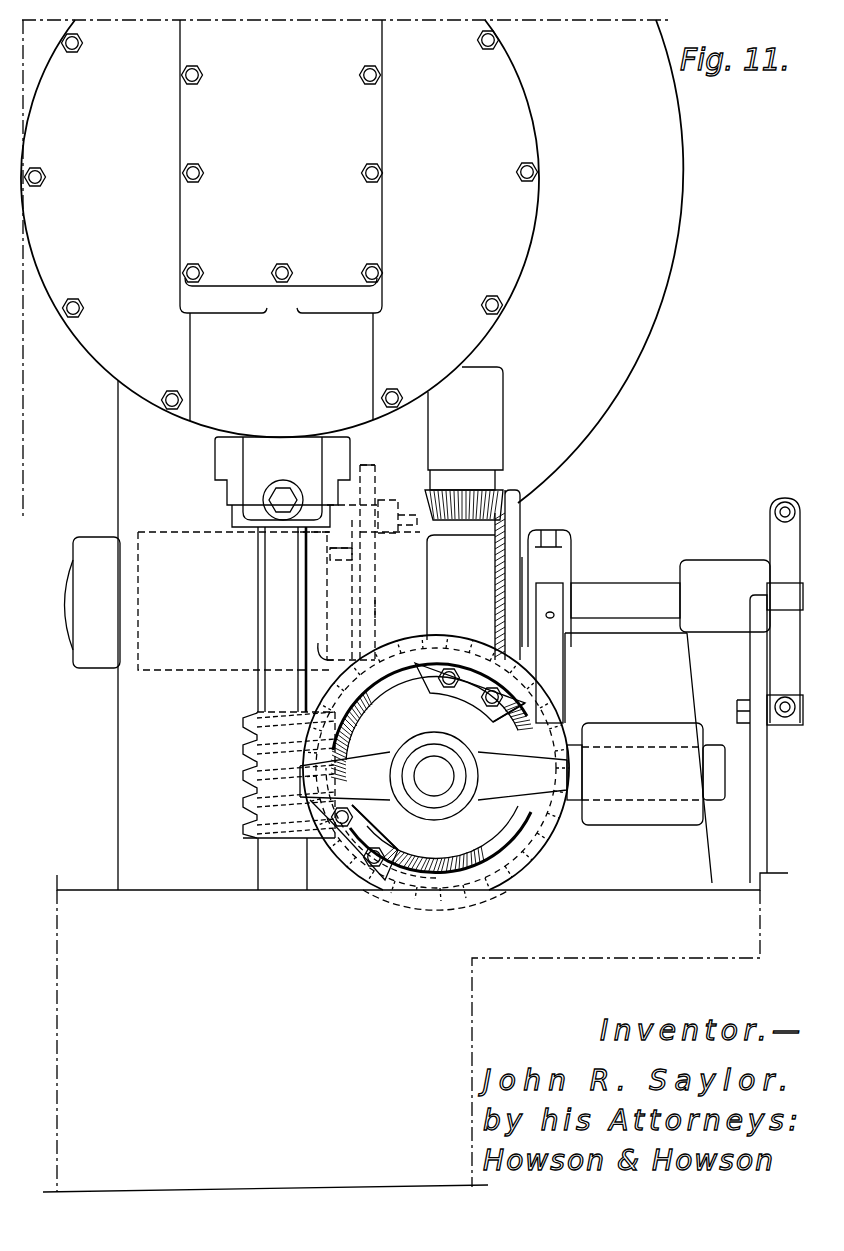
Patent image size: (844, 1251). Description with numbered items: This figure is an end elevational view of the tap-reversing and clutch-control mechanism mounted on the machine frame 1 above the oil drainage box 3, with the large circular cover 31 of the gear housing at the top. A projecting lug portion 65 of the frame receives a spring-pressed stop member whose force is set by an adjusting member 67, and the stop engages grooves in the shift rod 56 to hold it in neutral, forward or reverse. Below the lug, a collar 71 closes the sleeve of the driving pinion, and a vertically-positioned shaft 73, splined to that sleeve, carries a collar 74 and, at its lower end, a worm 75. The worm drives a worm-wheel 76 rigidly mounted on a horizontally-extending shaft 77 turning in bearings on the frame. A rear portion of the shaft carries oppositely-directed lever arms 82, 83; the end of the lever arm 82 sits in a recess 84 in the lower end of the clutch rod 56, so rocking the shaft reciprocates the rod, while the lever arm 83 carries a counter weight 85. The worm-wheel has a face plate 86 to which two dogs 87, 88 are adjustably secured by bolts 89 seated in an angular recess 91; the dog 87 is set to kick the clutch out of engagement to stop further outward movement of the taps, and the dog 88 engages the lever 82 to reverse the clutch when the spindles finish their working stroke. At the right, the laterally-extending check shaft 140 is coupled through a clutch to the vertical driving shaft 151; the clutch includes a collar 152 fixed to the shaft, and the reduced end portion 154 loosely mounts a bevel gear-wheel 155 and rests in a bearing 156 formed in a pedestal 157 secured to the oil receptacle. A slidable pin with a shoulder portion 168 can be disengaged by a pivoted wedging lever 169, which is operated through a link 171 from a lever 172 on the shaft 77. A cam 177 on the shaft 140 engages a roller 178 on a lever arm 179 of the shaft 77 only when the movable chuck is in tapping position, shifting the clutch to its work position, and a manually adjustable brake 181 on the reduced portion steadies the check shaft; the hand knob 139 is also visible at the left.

The machine frame 1 is at (650, 277).
The oil drainage box 3 is at (157, 890).
The circular cover plate 31 is at (510, 228).
The shift rod 56 is at (277, 618).
The projecting lug portion 65 is at (284, 488).
The adjusting member 67 is at (283, 508).
The collar 71 is at (230, 494).
The vertically-positioned shaft 73 is at (261, 598).
The collar 74 is at (242, 522).
The worm 75 is at (246, 750).
The worm-wheel 76 is at (370, 865).
The horizontally-extending shaft 77 is at (434, 776).
The lever arm 82 is at (388, 748).
The lever arm 83 is at (715, 790).
The recess 84 is at (270, 818).
The counter weight 85 is at (638, 814).
The face plate 86 is at (528, 870).
The dog 87 is at (386, 848).
The dog 88 is at (463, 667).
The bolts 89 is at (481, 700).
The angular recess 91 is at (520, 705).
The hand wheel 139 is at (88, 657).
The laterally-extending shaft 140 is at (68, 610).
The vertical driving shaft 151 is at (483, 362).
The collar 152 is at (427, 490).
The reduced end portion 154 is at (610, 585).
The bevel gear-wheel 155 is at (522, 515).
The bearing 156 is at (706, 562).
The pedestal 157 is at (755, 762).
The shoulder portion 168 is at (352, 565).
The wedging lever 169 is at (370, 467).
The link 171 is at (388, 612).
The lever 172 is at (333, 781).
The cam 177 is at (552, 660).
The roller 178 is at (557, 752).
The lever arm 179 is at (414, 823).
The manually adjustable brake 181 is at (783, 538).